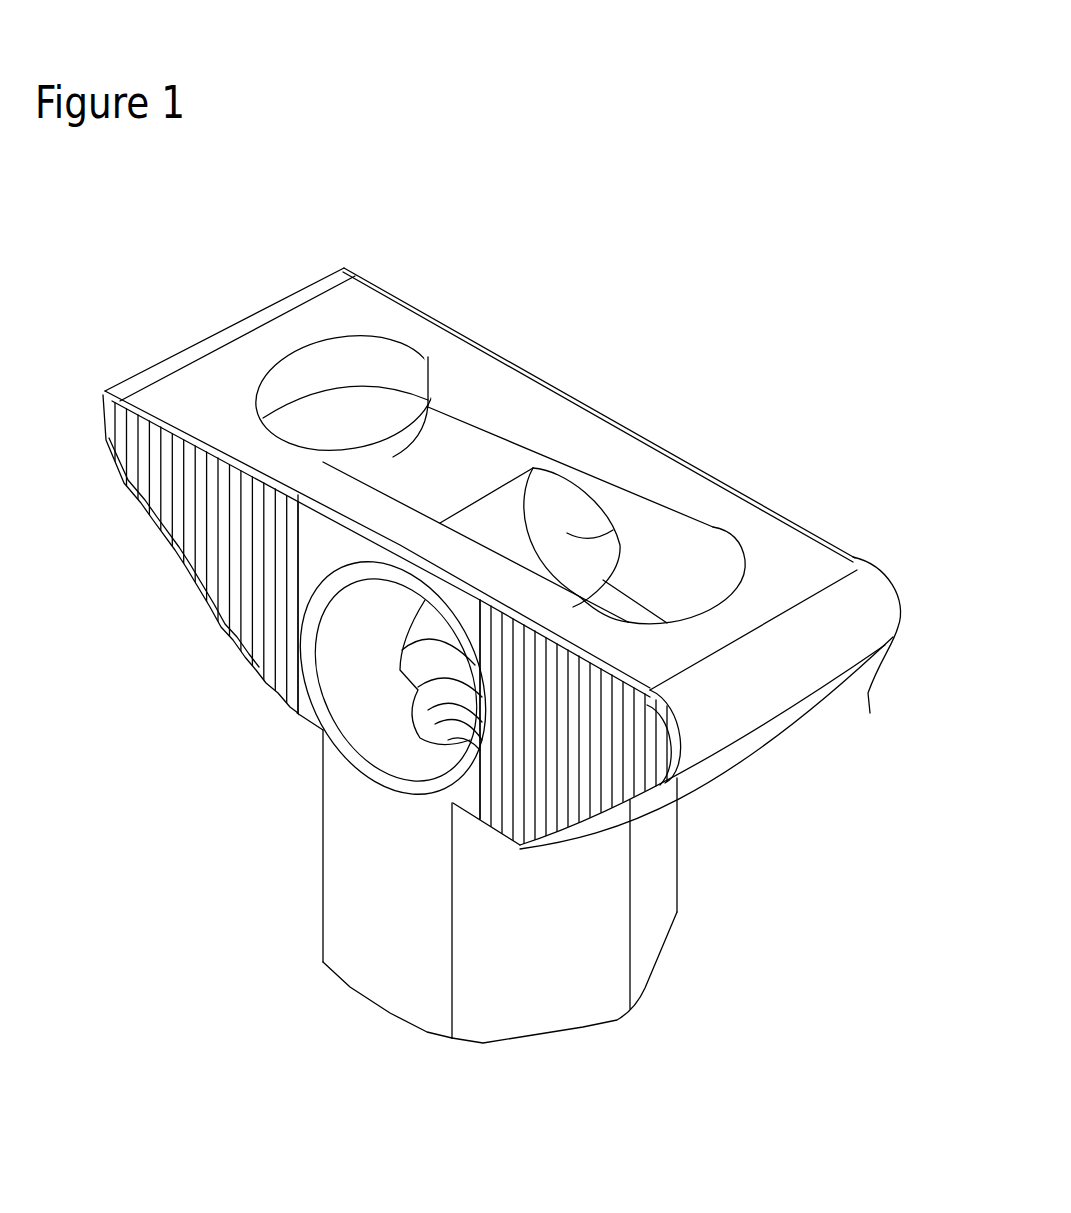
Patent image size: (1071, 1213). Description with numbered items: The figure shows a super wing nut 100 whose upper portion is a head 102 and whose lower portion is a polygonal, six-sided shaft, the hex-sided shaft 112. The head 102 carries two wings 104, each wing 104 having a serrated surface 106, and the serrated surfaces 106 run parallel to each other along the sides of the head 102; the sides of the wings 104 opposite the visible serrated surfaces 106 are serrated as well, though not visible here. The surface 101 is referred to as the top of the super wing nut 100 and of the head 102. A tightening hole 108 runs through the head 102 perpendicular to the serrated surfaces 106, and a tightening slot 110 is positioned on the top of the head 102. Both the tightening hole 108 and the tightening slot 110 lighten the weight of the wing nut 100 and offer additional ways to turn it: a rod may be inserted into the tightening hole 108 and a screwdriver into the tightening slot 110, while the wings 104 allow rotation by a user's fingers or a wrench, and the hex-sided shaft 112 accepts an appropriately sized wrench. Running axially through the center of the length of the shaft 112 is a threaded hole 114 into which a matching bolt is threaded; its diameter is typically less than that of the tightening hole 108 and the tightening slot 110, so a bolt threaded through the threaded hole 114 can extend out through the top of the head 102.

The super wing nut 100 is at (437, 194).
The surface 101 is at (383, 318).
The head 102 is at (530, 375).
The wing 104 is at (853, 557).
The serrated surface 106 is at (693, 903).
The tightening hole 108 is at (727, 405).
The tightening slot 110 is at (653, 563).
The hex-sided shaft 112 is at (323, 850).
The threaded hole 114 is at (438, 735).